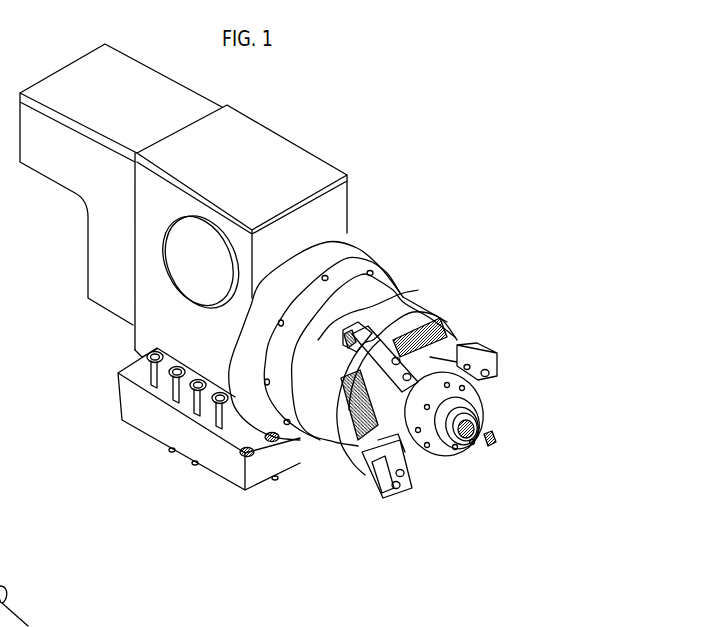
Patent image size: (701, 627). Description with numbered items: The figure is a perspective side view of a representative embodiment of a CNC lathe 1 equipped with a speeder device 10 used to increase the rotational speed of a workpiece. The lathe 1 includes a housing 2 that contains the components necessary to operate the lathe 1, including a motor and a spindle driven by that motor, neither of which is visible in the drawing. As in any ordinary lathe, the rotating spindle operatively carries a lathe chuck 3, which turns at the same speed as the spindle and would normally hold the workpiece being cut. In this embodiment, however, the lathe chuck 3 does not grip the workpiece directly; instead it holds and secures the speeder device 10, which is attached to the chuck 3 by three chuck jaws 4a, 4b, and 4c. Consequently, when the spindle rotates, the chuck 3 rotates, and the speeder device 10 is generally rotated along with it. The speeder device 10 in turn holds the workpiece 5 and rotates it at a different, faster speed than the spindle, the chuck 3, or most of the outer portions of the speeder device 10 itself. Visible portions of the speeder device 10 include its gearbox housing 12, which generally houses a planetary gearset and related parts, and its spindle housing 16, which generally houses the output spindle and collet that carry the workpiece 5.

The CNC lathe 1 is at (384, 155).
The housing 2 is at (310, 173).
The lathe chuck 3 is at (387, 306).
The chuck jaw 4a is at (368, 473).
The chuck jaw 4b is at (355, 322).
The chuck jaw 4c is at (475, 355).
The workpiece 5 is at (500, 441).
The speeder device 10 is at (486, 472).
The gearbox housing 12 is at (368, 495).
The spindle housing 16 is at (480, 407).